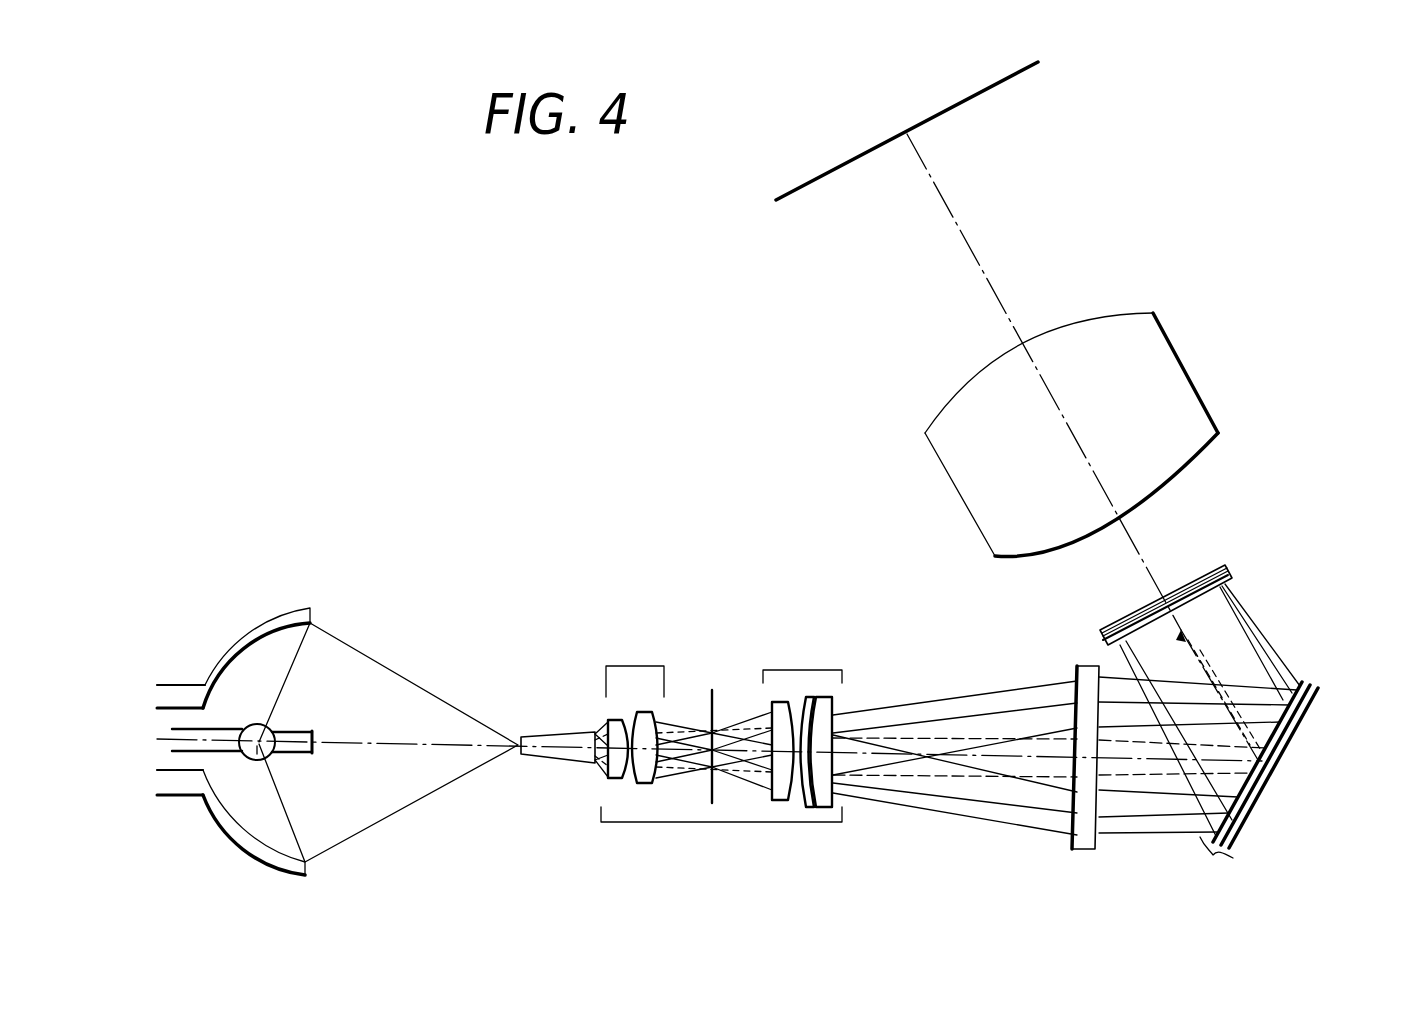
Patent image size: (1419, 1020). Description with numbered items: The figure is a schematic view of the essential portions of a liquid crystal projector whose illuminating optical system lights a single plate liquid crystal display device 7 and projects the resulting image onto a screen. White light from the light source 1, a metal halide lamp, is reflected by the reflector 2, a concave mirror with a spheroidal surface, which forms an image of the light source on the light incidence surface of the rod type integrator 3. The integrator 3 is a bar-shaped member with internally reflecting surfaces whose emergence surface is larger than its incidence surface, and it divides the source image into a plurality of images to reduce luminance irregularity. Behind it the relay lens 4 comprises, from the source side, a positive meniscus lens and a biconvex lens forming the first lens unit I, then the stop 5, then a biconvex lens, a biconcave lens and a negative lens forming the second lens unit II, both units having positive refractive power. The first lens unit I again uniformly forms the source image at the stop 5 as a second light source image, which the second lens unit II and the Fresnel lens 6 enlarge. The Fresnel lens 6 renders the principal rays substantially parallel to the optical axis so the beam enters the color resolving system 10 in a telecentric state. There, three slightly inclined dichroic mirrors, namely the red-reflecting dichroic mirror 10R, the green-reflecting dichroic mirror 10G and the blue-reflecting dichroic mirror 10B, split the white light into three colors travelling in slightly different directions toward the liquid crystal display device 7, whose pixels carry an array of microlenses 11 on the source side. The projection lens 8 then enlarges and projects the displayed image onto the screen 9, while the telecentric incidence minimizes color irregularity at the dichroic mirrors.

The white light source 1 is at (255, 753).
The reflector 2 is at (257, 638).
The rod type integrator 3 is at (550, 758).
The relay lens 4 is at (721, 754).
The first lens unit I is at (637, 664).
The second lens unit II is at (803, 668).
The stop 5 is at (712, 690).
The Fresnel lens 6 is at (1086, 850).
The liquid crystal display device 7 is at (1206, 563).
The projection lens 8 is at (1166, 382).
The screen 9 is at (1022, 71).
The color resolving system 10 is at (1284, 760).
The dichroic mirror reflecting red light 10R is at (1300, 680).
The dichroic mirror reflecting green light 10G is at (1310, 684).
The dichroic mirror reflecting blue light 10B is at (1316, 690).
The microlenses 11 is at (1232, 572).